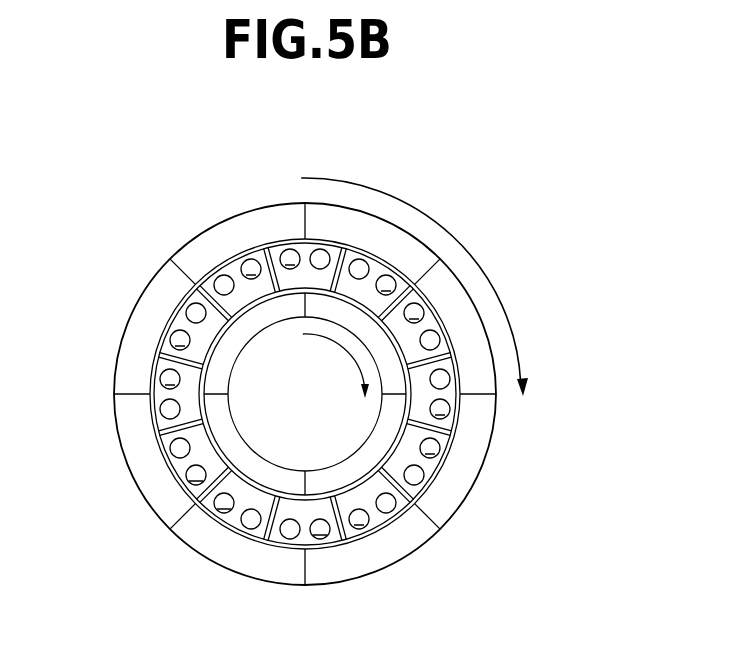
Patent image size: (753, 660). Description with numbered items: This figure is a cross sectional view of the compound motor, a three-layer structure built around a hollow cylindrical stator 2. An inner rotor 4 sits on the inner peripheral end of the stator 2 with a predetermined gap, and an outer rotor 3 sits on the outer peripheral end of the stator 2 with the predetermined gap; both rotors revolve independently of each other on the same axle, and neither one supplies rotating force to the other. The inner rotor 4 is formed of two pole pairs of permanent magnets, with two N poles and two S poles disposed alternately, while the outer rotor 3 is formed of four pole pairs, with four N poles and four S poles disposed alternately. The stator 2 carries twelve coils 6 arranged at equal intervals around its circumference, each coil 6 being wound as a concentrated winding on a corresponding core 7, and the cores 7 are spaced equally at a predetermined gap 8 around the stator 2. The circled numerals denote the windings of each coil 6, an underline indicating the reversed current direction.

The stator 2 is at (248, 291).
The outer rotor 3 is at (205, 248).
The inner rotor 4 is at (272, 475).
The coil 6 is at (183, 315).
The core 7 is at (177, 350).
The gap 8 is at (162, 430).